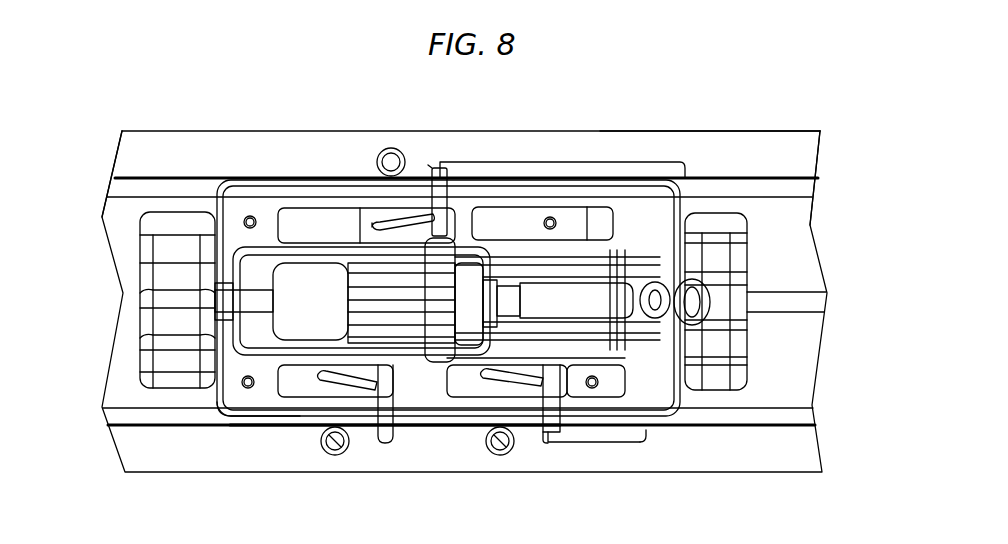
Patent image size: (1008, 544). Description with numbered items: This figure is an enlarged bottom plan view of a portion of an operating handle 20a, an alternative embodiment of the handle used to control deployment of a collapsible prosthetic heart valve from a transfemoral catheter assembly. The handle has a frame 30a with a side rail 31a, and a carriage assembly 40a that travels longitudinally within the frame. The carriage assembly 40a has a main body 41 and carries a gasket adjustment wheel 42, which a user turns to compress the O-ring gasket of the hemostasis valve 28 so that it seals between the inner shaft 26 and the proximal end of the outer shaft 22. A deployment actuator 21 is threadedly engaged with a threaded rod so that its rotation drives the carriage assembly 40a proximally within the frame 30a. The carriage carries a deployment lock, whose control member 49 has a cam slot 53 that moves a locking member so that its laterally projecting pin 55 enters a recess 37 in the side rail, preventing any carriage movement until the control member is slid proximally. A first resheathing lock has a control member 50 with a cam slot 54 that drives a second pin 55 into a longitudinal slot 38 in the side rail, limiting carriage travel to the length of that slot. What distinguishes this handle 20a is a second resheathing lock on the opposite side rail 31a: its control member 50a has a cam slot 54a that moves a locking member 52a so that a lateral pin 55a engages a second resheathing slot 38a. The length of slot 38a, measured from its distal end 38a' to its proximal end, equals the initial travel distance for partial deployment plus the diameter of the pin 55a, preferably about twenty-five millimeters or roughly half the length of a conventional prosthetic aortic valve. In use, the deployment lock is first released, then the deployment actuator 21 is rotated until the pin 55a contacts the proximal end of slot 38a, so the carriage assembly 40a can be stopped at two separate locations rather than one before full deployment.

The operating handle 20a is at (104, 150).
The deployment actuator 21 is at (168, 213).
The outer shaft 22 is at (247, 300).
The inner shaft 26 is at (795, 306).
The hemostasis valve 28 is at (506, 302).
The frame 30a is at (770, 126).
The side rail 31a is at (714, 131).
The recess 37 is at (397, 427).
The slot 38 is at (552, 170).
The second resheathing slot 38a is at (594, 482).
The distal end of second resheathing slot 38a' is at (548, 472).
The carriage assembly 40a is at (208, 424).
The main body 41 is at (231, 425).
The gasket adjustment wheel 42 is at (718, 385).
The control member 49 is at (292, 384).
The control member 50 is at (293, 223).
The control member 50a is at (458, 384).
The locking member 52a is at (547, 361).
The cam slot 53 is at (335, 456).
The cam slot 54 is at (390, 148).
The cam slot 54a is at (505, 456).
The laterally projecting pin 55 is at (438, 168).
The lateral pin 55a is at (560, 437).